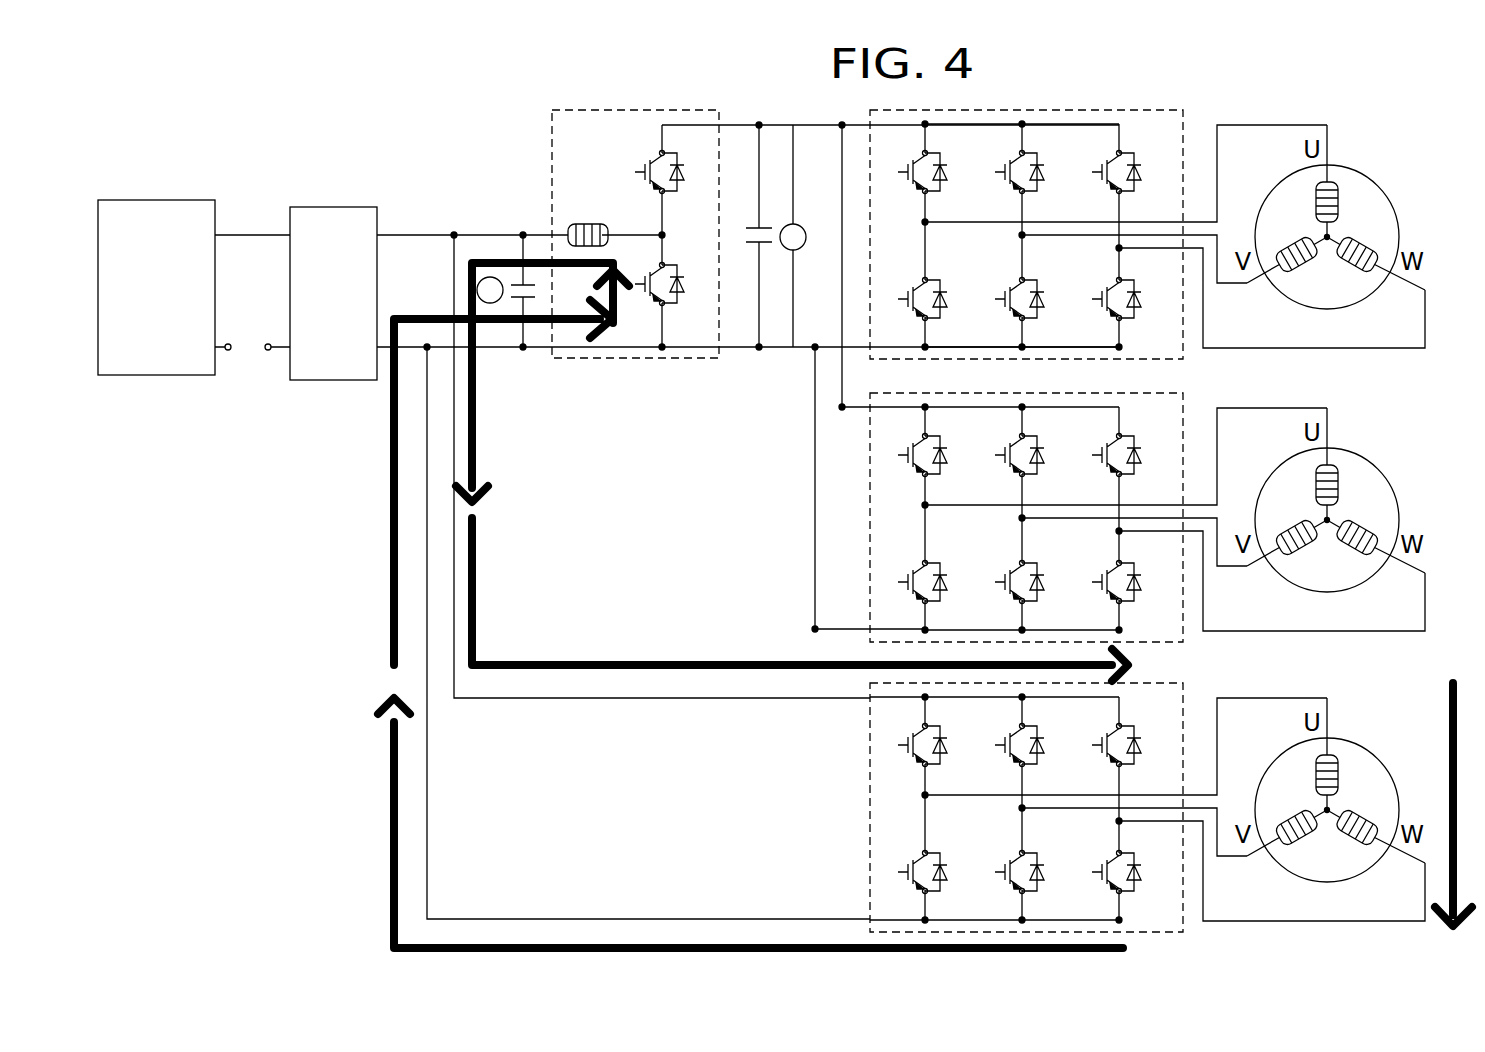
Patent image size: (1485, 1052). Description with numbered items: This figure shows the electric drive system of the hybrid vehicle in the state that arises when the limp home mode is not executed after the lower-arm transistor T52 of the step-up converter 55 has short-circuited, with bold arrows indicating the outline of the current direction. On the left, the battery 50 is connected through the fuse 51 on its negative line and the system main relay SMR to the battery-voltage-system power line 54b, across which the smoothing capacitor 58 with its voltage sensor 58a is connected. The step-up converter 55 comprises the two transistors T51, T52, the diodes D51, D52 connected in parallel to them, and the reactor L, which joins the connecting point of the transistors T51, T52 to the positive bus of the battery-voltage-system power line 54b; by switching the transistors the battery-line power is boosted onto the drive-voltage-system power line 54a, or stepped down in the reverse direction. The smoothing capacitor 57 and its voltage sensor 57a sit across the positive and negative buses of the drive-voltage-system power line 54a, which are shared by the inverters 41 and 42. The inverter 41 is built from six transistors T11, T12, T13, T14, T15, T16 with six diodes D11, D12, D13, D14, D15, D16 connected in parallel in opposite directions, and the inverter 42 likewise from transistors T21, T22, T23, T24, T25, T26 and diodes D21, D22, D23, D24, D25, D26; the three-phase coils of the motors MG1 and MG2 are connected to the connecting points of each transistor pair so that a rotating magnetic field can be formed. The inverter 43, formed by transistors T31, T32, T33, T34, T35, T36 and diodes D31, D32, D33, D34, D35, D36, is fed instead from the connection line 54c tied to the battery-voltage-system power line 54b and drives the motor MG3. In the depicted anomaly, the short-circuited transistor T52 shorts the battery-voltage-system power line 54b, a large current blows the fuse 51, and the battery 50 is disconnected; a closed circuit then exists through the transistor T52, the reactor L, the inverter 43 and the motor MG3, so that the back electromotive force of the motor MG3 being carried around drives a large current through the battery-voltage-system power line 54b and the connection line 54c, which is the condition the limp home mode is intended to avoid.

The battery 50 is at (173, 197).
The fuse 51 is at (246, 343).
The system main relay SMR is at (327, 205).
The drive-voltage-system power line 54a is at (832, 345).
The battery-voltage-system power line 54b is at (412, 345).
The connection line 54c is at (427, 618).
The step-up converter 55 is at (662, 234).
The smoothing capacitor 57 is at (757, 227).
The voltage sensor 57a is at (793, 224).
The smoothing capacitor 58 is at (522, 284).
The voltage sensor 58a is at (490, 277).
The reactor L is at (585, 222).
The transistor T51 is at (640, 180).
The transistor T52 is at (640, 283).
The diode D51 is at (689, 195).
The diode D52 is at (689, 301).
The inverter 41 is at (1147, 228).
The inverter 42 is at (1147, 511).
The inverter 43 is at (1147, 801).
The motor MG1 is at (1362, 167).
The motor MG2 is at (1362, 450).
The motor MG3 is at (1362, 739).
The transistor T11 is at (901, 158).
The transistor T12 is at (998, 158).
The transistor T13 is at (1094, 158).
The transistor T14 is at (901, 284).
The transistor T15 is at (998, 284).
The transistor T16 is at (1094, 284).
The diode D11 is at (957, 187).
The diode D12 is at (1054, 187).
The diode D13 is at (1146, 187).
The diode D14 is at (958, 312).
The diode D15 is at (1054, 312).
The diode D16 is at (1146, 312).
The transistor T21 is at (901, 441).
The transistor T22 is at (998, 441).
The transistor T23 is at (1094, 441).
The transistor T24 is at (901, 567).
The transistor T25 is at (998, 567).
The transistor T26 is at (1094, 567).
The diode D21 is at (957, 470).
The diode D22 is at (1054, 470).
The diode D23 is at (1146, 470).
The diode D24 is at (958, 595).
The diode D25 is at (1054, 595).
The diode D26 is at (1146, 595).
The transistor T31 is at (901, 731).
The transistor T32 is at (998, 731).
The transistor T33 is at (1094, 731).
The transistor T34 is at (901, 857).
The transistor T35 is at (998, 857).
The transistor T36 is at (1094, 857).
The diode D31 is at (957, 760).
The diode D32 is at (1054, 760).
The diode D33 is at (1146, 760).
The diode D34 is at (958, 885).
The diode D35 is at (1054, 885).
The diode D36 is at (1146, 885).